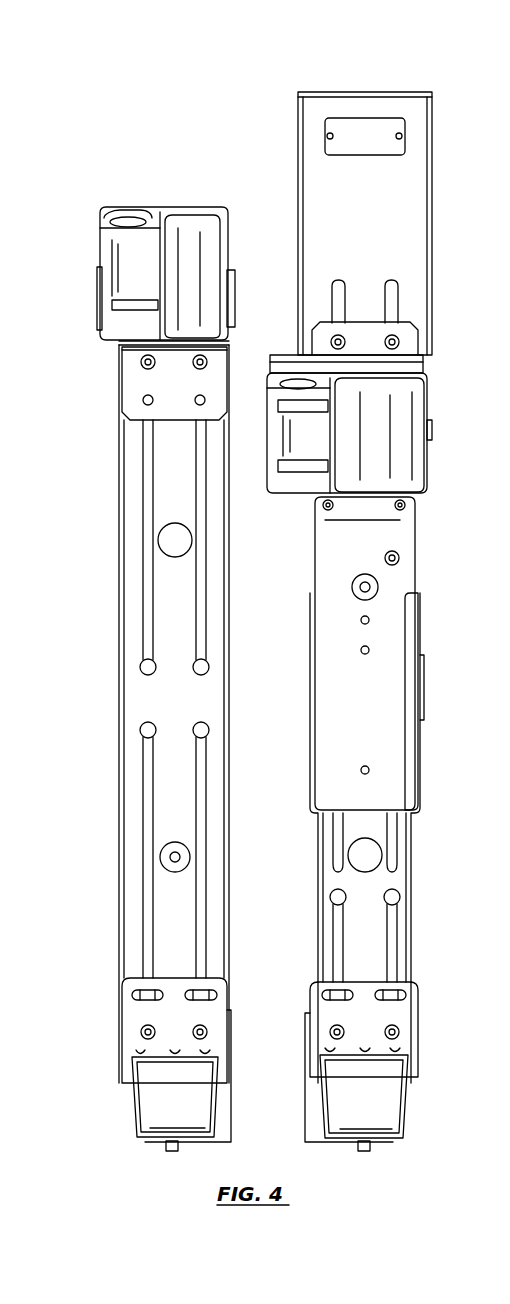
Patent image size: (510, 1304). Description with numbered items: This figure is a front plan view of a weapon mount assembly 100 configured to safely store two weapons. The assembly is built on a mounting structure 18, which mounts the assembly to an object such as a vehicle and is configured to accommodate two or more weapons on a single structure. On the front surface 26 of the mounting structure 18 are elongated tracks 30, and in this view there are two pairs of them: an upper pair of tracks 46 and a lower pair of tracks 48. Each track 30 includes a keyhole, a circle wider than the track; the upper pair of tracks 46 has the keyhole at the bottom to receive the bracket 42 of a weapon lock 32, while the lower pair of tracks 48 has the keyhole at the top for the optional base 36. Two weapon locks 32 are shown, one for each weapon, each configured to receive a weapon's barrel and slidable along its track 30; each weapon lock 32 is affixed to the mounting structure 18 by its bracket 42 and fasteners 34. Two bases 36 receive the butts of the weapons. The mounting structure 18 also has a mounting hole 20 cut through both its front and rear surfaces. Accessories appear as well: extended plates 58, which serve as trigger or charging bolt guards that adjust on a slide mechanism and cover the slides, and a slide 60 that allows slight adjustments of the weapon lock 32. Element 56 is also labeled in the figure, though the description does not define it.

The weapon mount assembly 100 is at (338, 72).
The mounting structure 18 is at (106, 801).
The mounting hole 20 is at (160, 540).
The front surface 26 is at (165, 702).
The elongated track 30 is at (140, 666).
The weapon lock 32 is at (172, 244).
The fasteners 34 is at (145, 362).
The base 36 is at (150, 1110).
The bracket 42 is at (128, 386).
The upper pair of tracks 46 is at (200, 632).
The lower pair of tracks 48 is at (200, 822).
The clamp cap 56 is at (113, 210).
The extended plates 58 is at (392, 750).
The slide 60 is at (415, 188).